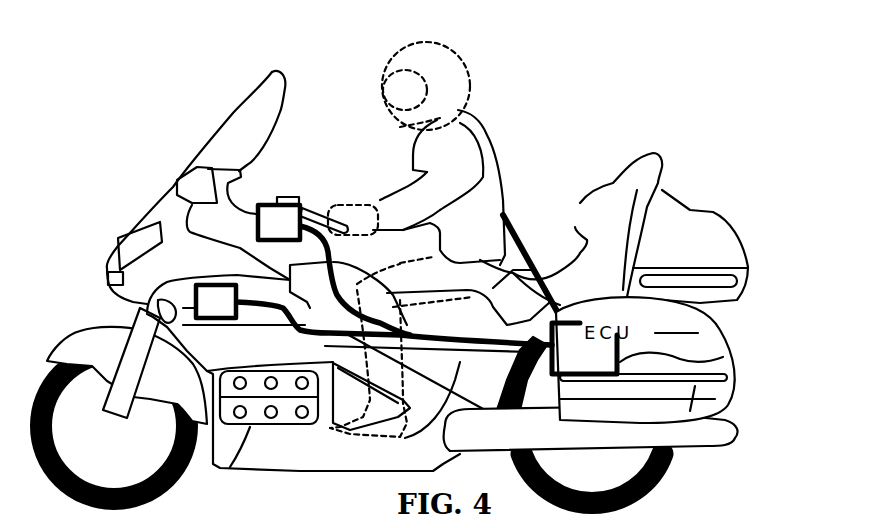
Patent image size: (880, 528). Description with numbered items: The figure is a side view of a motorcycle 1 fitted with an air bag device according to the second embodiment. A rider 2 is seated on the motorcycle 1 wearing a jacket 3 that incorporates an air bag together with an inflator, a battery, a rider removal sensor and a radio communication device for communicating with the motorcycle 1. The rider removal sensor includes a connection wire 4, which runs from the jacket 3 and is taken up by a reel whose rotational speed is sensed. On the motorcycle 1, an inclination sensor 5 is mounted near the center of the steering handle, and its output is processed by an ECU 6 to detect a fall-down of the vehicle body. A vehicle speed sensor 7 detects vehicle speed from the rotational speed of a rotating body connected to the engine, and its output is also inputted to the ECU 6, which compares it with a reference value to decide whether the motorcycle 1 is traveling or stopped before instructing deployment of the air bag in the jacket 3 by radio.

The motorcycle 1 is at (163, 131).
The rider 2 is at (468, 70).
The jacket 3 is at (505, 185).
The connection wire 4 is at (655, 178).
The inclination sensor 5 is at (277, 198).
The ECU 6 is at (718, 362).
The vehicle speed sensor 7 is at (107, 270).